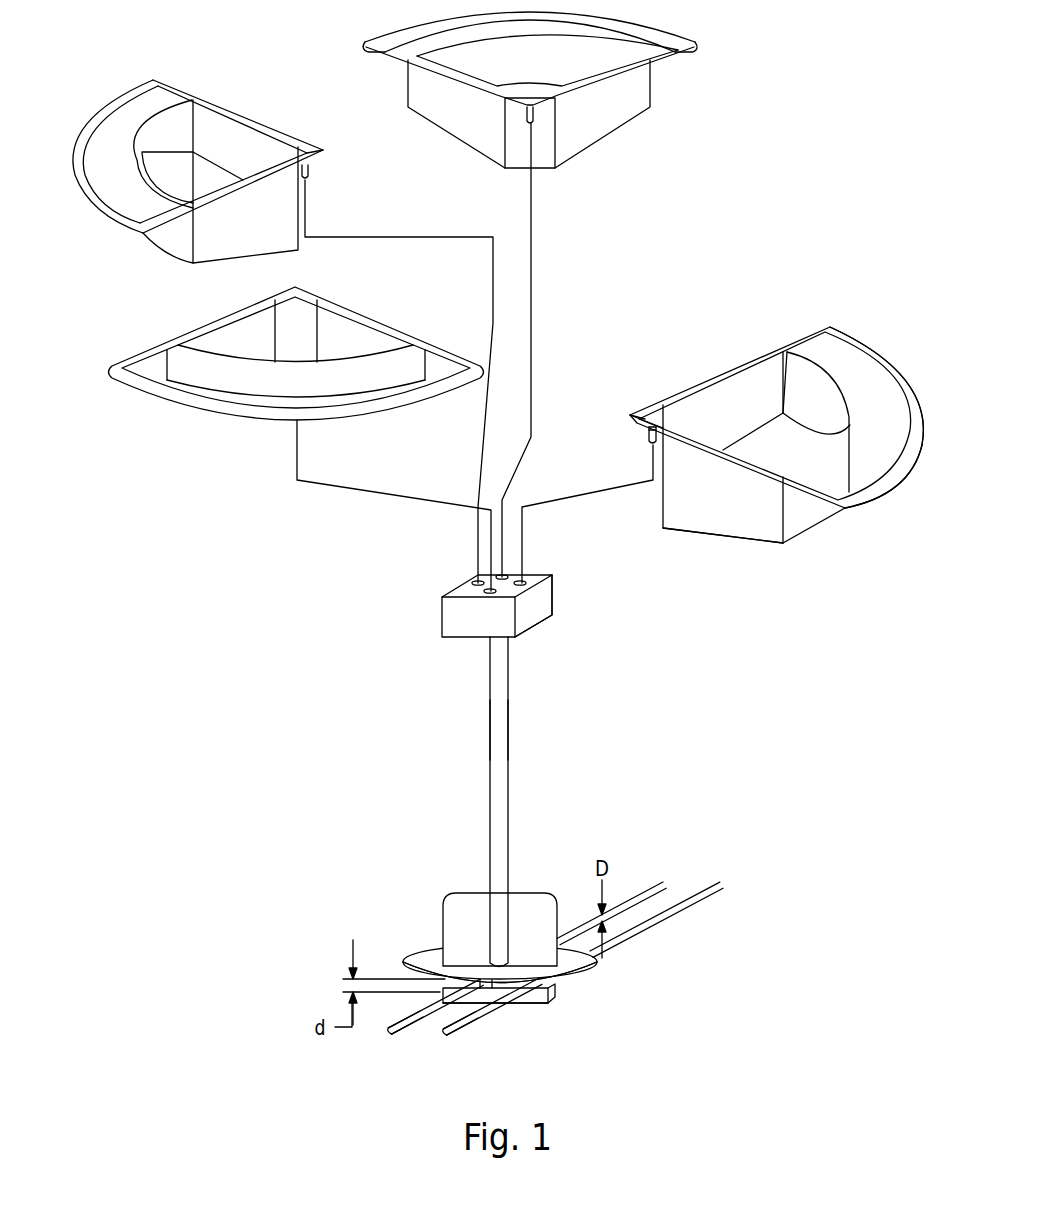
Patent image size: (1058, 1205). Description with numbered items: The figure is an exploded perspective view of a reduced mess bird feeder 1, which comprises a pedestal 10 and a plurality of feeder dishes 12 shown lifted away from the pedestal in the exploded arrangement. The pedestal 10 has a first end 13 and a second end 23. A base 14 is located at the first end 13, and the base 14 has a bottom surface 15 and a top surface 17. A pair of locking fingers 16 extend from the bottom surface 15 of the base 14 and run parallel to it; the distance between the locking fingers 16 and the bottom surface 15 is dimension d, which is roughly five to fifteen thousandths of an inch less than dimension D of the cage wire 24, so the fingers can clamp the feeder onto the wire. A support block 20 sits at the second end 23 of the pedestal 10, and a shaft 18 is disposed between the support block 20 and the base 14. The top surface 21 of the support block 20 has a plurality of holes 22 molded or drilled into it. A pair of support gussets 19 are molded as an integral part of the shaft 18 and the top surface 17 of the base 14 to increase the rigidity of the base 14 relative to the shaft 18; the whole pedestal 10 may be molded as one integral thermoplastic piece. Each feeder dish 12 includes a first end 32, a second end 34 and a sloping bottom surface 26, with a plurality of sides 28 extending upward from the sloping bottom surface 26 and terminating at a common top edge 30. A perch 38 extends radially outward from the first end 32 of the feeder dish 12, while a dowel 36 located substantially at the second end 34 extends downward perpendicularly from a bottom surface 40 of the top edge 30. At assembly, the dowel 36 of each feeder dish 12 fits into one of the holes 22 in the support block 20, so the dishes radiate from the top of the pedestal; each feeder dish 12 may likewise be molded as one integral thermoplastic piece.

The reduced mess bird feeder 1 is at (398, 694).
The pedestal 10 is at (526, 710).
The feeder dish 12 is at (437, 48).
The first end 13 is at (502, 1022).
The base 14 is at (560, 982).
The bottom surface 15 is at (392, 1025).
The locking fingers 16 is at (540, 1003).
The top surface 17 is at (420, 955).
The shaft 18 is at (505, 757).
The support gussets 19 is at (460, 890).
The support block 20 is at (535, 604).
The top surface 21 is at (478, 580).
The holes 22 is at (505, 575).
The second end 23 is at (533, 630).
The cage wire 24 is at (705, 878).
The sloping bottom surface 26 is at (723, 538).
The sides 28 is at (740, 382).
The top edge 30 is at (654, 412).
The first end 32 is at (888, 352).
The second end 34 is at (639, 400).
The dowel 36 is at (652, 440).
The perch 38 is at (864, 502).
The bottom surface 40 is at (642, 422).